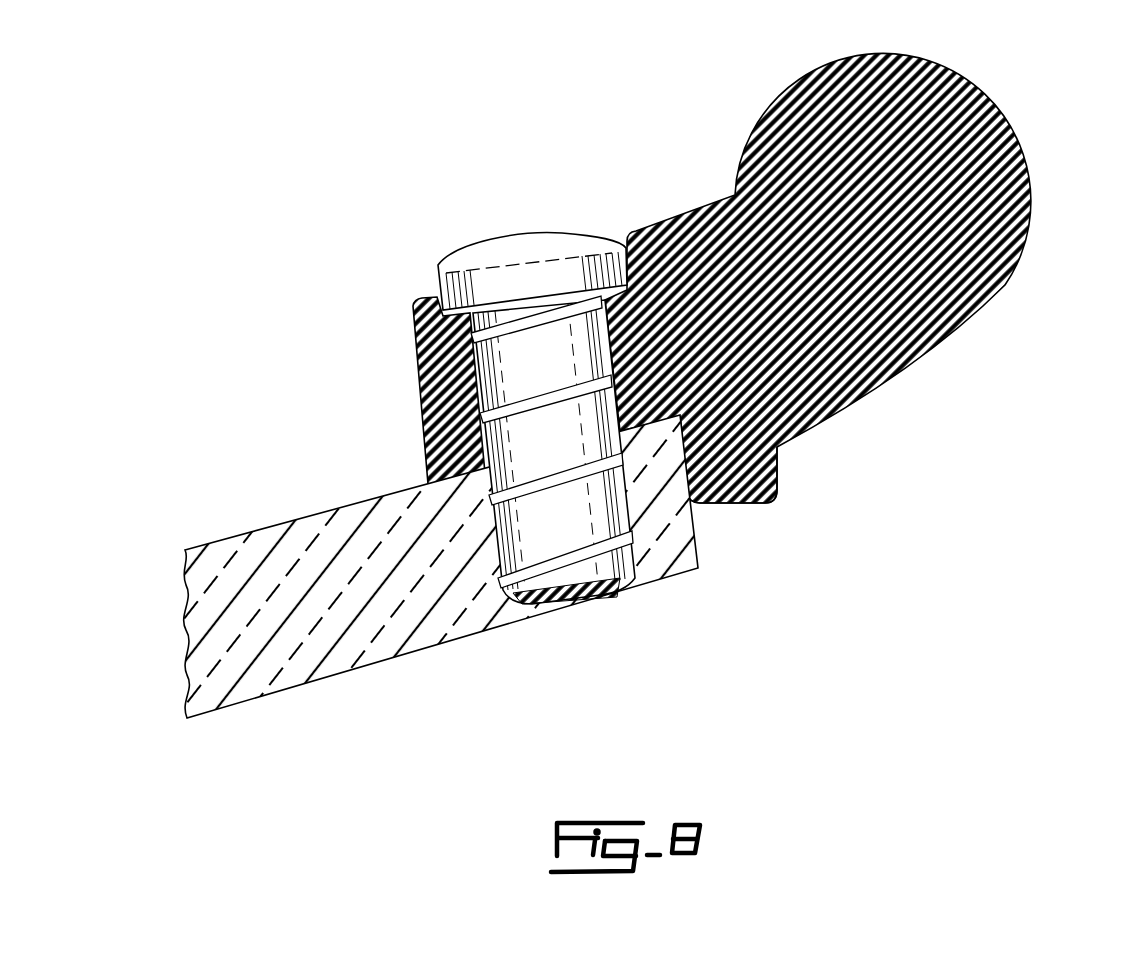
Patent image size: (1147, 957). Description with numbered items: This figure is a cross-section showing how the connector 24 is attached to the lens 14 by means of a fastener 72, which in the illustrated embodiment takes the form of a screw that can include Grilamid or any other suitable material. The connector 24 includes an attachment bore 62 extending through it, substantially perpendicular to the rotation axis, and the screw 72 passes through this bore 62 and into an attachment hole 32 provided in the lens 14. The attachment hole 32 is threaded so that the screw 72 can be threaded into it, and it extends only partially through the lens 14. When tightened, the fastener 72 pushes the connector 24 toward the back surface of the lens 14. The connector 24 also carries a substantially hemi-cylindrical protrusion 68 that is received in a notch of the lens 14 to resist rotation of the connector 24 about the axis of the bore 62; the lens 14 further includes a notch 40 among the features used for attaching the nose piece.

The lens 14 is at (300, 694).
The connector 24 is at (853, 410).
The attachment hole 32 is at (605, 605).
The notch 40 is at (715, 545).
The attachment bore 62 is at (413, 306).
The protrusion 68 is at (743, 507).
The fastener 72 is at (538, 236).